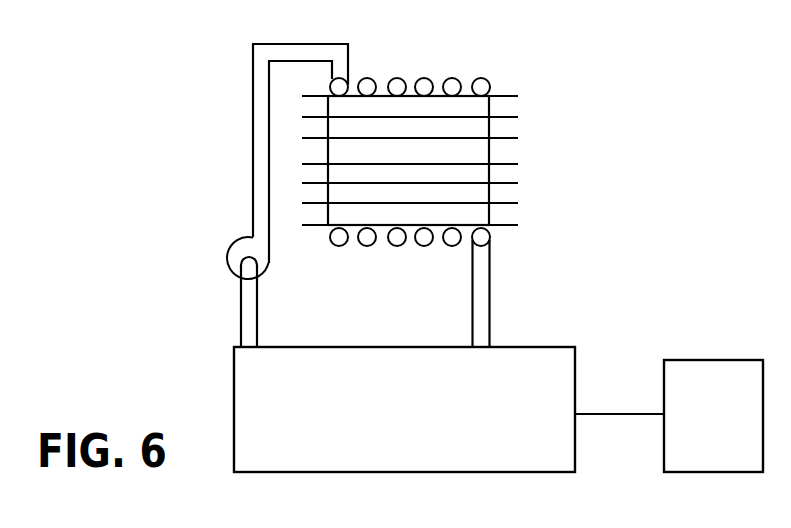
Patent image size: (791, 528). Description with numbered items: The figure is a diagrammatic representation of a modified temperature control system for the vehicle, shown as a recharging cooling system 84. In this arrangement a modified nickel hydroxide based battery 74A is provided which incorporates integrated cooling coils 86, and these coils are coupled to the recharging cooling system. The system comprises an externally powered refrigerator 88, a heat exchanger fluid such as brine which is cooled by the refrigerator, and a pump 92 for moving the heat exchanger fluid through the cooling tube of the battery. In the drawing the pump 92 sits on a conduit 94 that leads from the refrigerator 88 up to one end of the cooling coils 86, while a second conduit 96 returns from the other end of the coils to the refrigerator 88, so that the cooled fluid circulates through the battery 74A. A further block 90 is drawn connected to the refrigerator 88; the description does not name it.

The recharging cooling system 84 is at (480, 60).
The modified nickel hydroxide based battery 74A is at (538, 180).
The integrated cooling coils 86 is at (398, 78).
The supply conduit 94 is at (258, 141).
The pump 92 is at (265, 262).
The return conduit 96 is at (485, 310).
The externally powered refrigerator 88 is at (402, 422).
The controller 90 is at (690, 437).